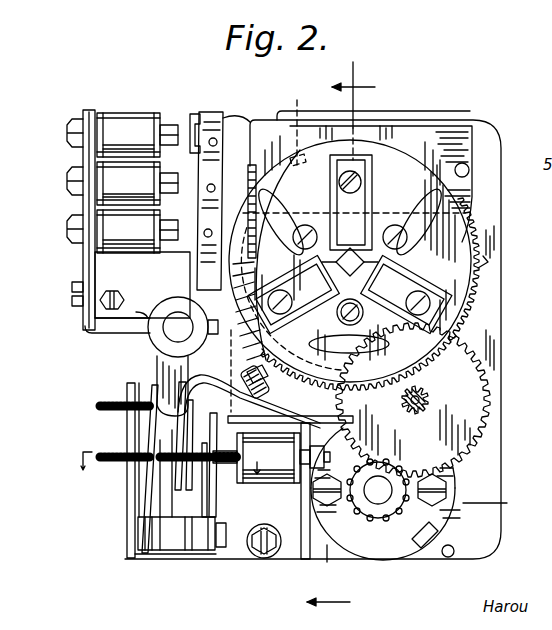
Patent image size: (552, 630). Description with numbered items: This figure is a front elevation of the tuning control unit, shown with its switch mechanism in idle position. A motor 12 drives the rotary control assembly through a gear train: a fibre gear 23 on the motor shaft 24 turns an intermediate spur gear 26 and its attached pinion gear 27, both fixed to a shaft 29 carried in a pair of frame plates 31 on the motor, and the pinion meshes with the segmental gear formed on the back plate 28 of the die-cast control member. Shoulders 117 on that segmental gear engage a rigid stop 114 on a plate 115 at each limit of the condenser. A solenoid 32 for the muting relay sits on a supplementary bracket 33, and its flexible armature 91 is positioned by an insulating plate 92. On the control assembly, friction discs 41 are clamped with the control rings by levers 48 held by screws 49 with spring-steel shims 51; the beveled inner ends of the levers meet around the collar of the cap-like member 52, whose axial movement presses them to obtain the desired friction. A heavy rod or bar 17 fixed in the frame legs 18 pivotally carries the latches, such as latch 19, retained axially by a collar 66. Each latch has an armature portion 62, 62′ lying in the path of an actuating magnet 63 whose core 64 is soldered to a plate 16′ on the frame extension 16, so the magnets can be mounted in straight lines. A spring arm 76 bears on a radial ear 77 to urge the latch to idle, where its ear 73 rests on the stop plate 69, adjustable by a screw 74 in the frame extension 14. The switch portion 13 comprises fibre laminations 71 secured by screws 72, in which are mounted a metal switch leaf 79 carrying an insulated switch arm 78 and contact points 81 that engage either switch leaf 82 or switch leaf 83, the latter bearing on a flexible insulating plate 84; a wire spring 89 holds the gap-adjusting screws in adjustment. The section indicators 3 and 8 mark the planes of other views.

The section line 3- 3 is at (349, 338).
The spring / section indicator 8 is at (168, 461).
The motor 12 is at (428, 553).
The switch portion 13 is at (165, 530).
The frame extension 14 is at (132, 515).
The frame extension 16 is at (88, 110).
The plate 16′ is at (82, 114).
The rod or bar 17 is at (178, 327).
The legs 18 is at (205, 112).
The latch 19 is at (232, 341).
The fibre gear 23 is at (386, 520).
The motor shaft 24 is at (377, 491).
The intermediate spur gear 26 is at (475, 412).
The pinion gear 27 is at (422, 410).
The back plate 28 is at (470, 308).
The shaft 29 is at (430, 398).
The frame plates 31 is at (421, 494).
The solenoid 32 is at (280, 470).
The supplementary bracket 33 is at (292, 556).
The friction discs 41 is at (445, 333).
The levers 48 is at (430, 268).
The screws 49 is at (362, 180).
The shim 51 is at (302, 293).
The cap-like member 52 is at (300, 300).
The armature portion 62 is at (228, 236).
The armature portion 62′ is at (224, 198).
The actuating magnets 63 is at (128, 125).
The core 64 is at (172, 128).
The collar 66 is at (178, 300).
The stop plate 69 is at (148, 472).
The fibre laminations 71 is at (138, 545).
The screws 72 is at (221, 548).
The ear 73 is at (167, 375).
The adjusting screw 74 is at (100, 405).
The spring arms 76 is at (100, 333).
The radial ear 77 is at (140, 312).
The switch arm 78 is at (203, 376).
The switch leaf 79 is at (172, 520).
The contact points 81 is at (190, 440).
The switch leaf 82 is at (160, 530).
The switch leaf 83 is at (190, 520).
The insulating plate 84 is at (190, 503).
The wire spring 89 is at (128, 430).
The armature 91 is at (266, 382).
The insulating plate 92 is at (282, 335).
The stop 114 is at (299, 124).
The plate 115 is at (432, 140).
The shoulders 117 is at (482, 270).